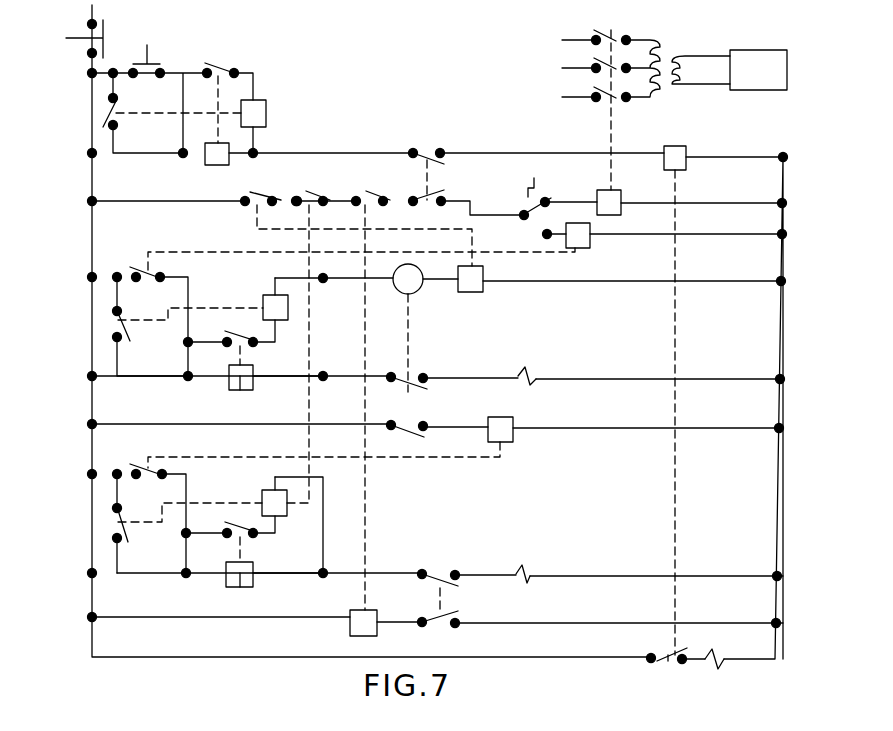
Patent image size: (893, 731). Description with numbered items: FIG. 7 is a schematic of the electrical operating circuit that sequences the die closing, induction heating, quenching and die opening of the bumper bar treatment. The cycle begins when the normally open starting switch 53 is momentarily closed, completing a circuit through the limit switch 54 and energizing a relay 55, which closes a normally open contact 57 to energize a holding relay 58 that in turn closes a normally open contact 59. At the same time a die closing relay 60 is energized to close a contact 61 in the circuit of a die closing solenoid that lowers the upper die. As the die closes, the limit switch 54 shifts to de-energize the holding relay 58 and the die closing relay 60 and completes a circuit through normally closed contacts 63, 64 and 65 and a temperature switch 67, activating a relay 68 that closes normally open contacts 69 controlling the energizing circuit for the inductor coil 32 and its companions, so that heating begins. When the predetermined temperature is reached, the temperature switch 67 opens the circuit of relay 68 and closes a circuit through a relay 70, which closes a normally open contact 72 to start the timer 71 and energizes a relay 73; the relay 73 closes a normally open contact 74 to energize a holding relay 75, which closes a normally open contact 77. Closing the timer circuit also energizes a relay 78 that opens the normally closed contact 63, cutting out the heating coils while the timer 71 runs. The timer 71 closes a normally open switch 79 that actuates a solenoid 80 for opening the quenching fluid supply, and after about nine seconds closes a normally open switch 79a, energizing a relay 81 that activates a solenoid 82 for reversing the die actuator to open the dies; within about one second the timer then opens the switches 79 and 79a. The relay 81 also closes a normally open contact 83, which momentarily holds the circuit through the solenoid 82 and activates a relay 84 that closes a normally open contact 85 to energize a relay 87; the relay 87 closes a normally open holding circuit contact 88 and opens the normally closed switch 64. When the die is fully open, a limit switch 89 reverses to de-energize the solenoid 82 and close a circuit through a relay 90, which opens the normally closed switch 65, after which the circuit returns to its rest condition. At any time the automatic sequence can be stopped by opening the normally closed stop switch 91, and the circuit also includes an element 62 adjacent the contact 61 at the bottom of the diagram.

The stop switch 91 is at (86, 28).
The starting switch 53 is at (162, 62).
The contact 57 is at (226, 62).
The contact 59 is at (104, 114).
The holding relay 58 is at (268, 113).
The relay 55 is at (212, 166).
The limit switch 54 is at (430, 150).
The contacts 69 is at (596, 107).
The inductor coil 32 is at (748, 91).
The die closing relay 60 is at (688, 148).
The relay 68 is at (622, 194).
The temperature switch 67 is at (518, 199).
The relay 70 is at (590, 250).
The contact 63 is at (258, 194).
The contact 64 is at (310, 192).
The contact 65 is at (376, 192).
The contact 72 is at (136, 266).
The contact 77 is at (114, 328).
The holding relay 75 is at (265, 295).
The contact 74 is at (252, 346).
The relay 73 is at (229, 388).
The timer 71 is at (416, 292).
The relay 78 is at (485, 290).
The solenoid 80 is at (531, 378).
The switch 79 is at (428, 389).
The switch 79a is at (431, 436).
The relay 81 is at (515, 440).
The contact 83 is at (140, 464).
The holding circuit contact 88 is at (116, 527).
The relay 87 is at (262, 491).
The contact 85 is at (255, 536).
The relay 84 is at (253, 588).
The die opening solenoid 82 is at (529, 575).
The limit switch 89 is at (462, 602).
The relay 90 is at (378, 620).
The contact 61 is at (668, 665).
The line 62 is at (724, 667).